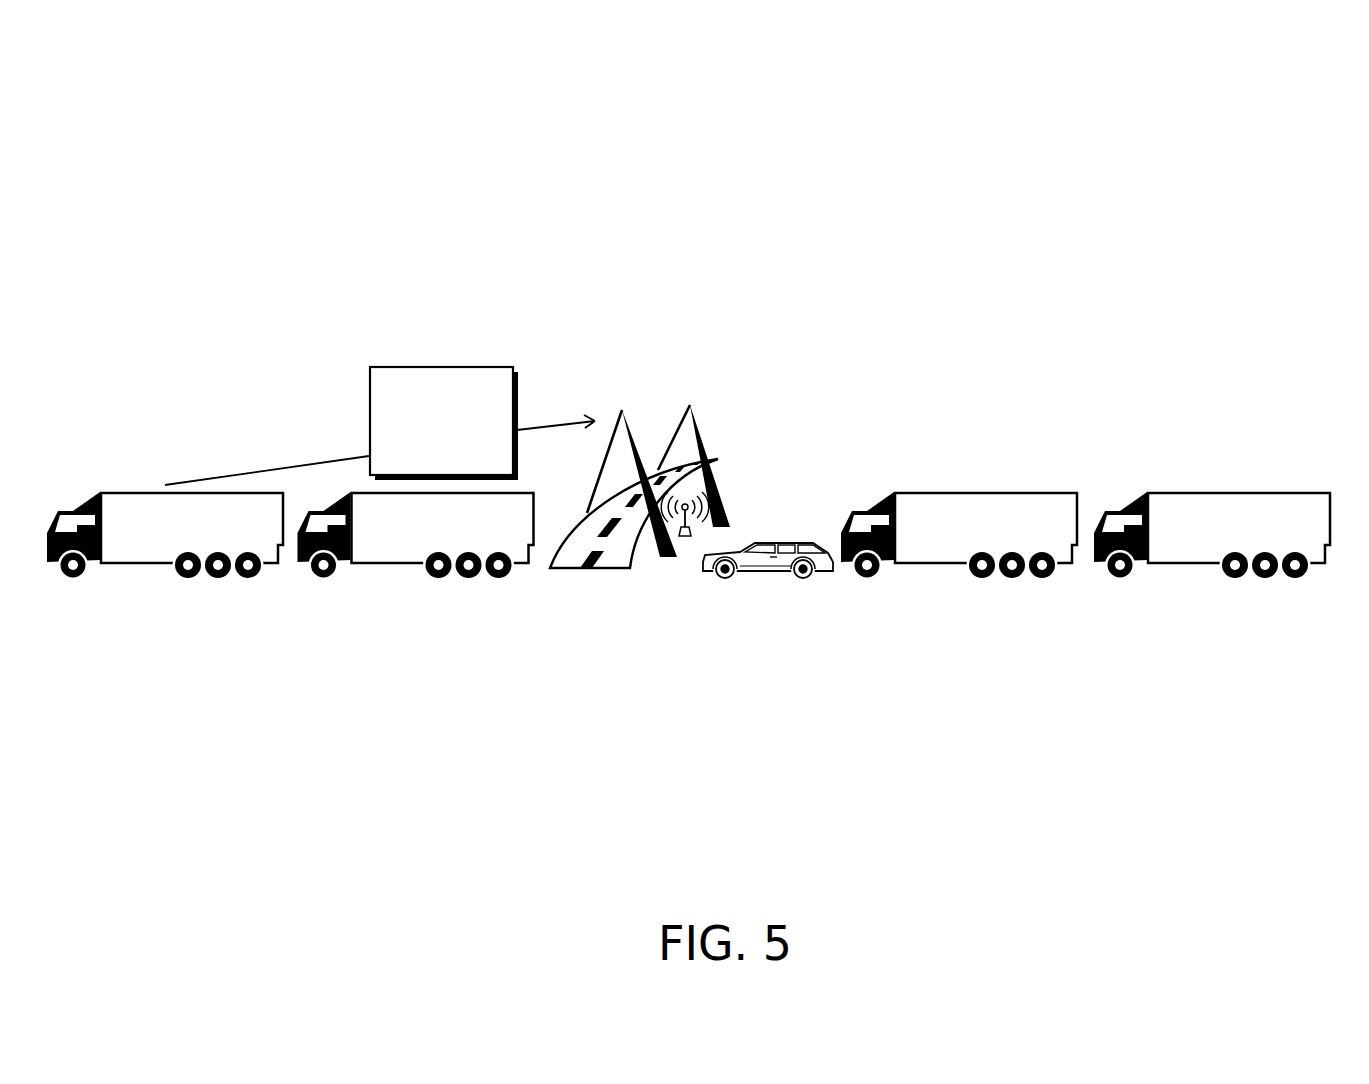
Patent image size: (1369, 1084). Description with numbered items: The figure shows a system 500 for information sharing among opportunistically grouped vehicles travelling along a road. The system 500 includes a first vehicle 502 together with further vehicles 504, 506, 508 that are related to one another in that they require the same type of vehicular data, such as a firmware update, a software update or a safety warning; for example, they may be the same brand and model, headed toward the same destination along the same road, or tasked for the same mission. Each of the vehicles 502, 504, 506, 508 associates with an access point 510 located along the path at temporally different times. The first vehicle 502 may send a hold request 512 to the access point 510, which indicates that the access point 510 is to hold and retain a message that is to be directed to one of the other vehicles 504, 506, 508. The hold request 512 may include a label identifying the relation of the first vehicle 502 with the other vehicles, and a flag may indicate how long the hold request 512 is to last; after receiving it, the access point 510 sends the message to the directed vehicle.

The system 500 is at (1273, 89).
The first vehicle 502 is at (155, 542).
The vehicle 504 is at (416, 536).
The vehicle 506 is at (959, 536).
The vehicle 508 is at (1212, 536).
The access point 510 is at (668, 428).
The hold request 512 is at (421, 465).